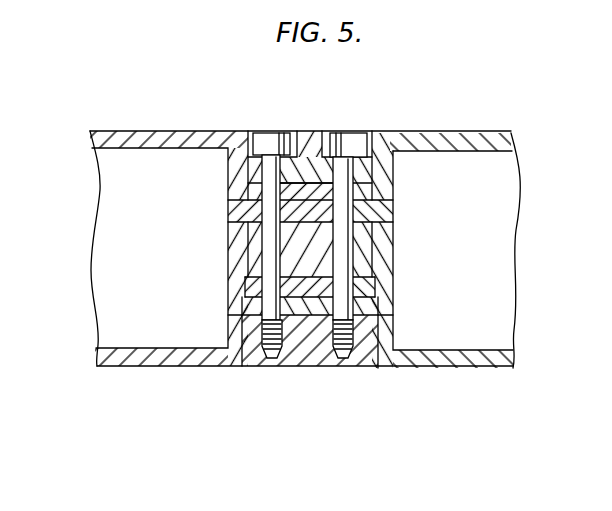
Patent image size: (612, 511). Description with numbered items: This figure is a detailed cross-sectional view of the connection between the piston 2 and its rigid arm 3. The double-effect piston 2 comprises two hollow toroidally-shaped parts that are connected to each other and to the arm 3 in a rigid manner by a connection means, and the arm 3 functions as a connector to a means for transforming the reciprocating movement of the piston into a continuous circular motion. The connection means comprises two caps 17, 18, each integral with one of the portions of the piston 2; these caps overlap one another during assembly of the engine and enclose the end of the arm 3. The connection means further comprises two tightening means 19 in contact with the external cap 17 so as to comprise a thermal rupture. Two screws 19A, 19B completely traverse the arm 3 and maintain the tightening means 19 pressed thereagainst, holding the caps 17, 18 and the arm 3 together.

The double-effect piston 2 is at (176, 255).
The rigid arm 3 is at (370, 262).
The external cap 17 is at (309, 197).
The cap 18 is at (309, 358).
The tightening means 19 is at (287, 346).
The screw 19A is at (347, 150).
The screw 19B is at (273, 150).